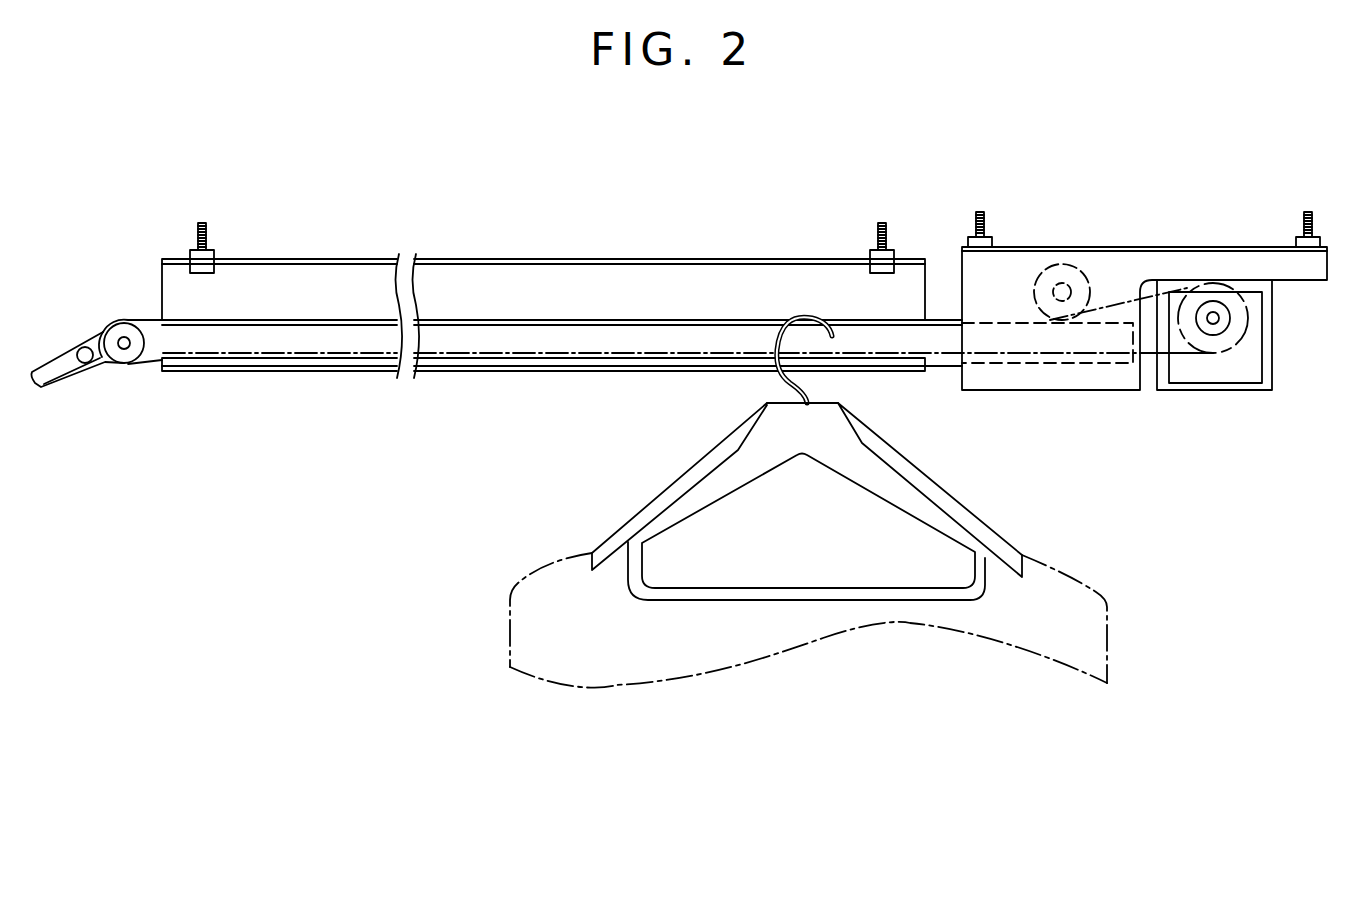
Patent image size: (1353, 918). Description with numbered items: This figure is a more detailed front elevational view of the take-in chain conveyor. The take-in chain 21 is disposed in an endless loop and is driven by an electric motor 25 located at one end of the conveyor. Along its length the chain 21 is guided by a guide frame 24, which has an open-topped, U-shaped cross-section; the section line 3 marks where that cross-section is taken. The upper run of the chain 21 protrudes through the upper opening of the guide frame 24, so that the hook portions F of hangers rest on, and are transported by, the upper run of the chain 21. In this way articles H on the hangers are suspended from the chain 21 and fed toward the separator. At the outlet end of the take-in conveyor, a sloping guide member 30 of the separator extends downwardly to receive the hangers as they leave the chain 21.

The take-in chain 21 is at (735, 318).
The guide frame 24 is at (777, 318).
The electric motor 25 is at (1248, 385).
The sloping guide member 30 is at (63, 348).
The section line 3- 3 is at (938, 236).
The hook portions F is at (782, 378).
The articles H is at (593, 522).